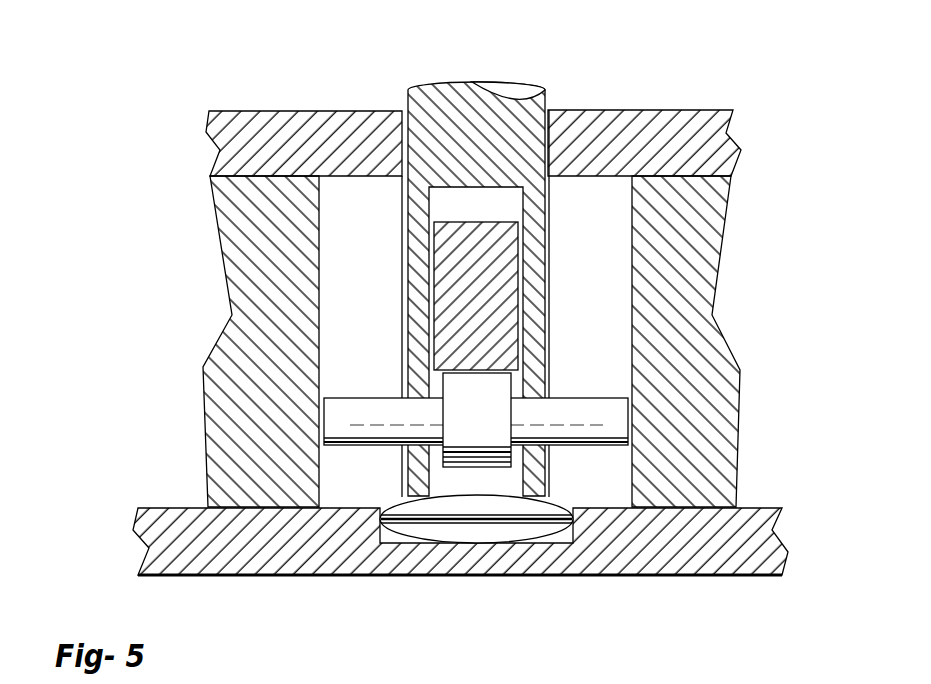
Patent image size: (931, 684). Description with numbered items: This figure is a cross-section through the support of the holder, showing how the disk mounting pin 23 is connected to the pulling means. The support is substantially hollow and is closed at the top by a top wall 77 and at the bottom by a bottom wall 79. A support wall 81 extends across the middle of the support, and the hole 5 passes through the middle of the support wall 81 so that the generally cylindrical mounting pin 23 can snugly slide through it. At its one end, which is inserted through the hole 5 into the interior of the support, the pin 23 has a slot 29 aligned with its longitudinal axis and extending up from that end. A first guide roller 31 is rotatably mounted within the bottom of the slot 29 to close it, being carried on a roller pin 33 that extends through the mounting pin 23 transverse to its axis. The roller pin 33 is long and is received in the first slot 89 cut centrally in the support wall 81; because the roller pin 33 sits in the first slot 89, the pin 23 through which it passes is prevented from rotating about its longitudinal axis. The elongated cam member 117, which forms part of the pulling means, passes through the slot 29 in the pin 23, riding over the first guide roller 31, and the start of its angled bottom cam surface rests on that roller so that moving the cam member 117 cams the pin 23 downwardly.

The hole 5 is at (548, 133).
The disk mounting pin 23 is at (544, 90).
The slot 29 is at (481, 204).
The first guide roller 31 is at (460, 470).
The roller pin 33 is at (343, 411).
The top wall 77 is at (708, 130).
The bottom wall 79 is at (752, 528).
The support wall 81 is at (263, 302).
The first slot 89 is at (353, 342).
The cam member 117 is at (457, 233).